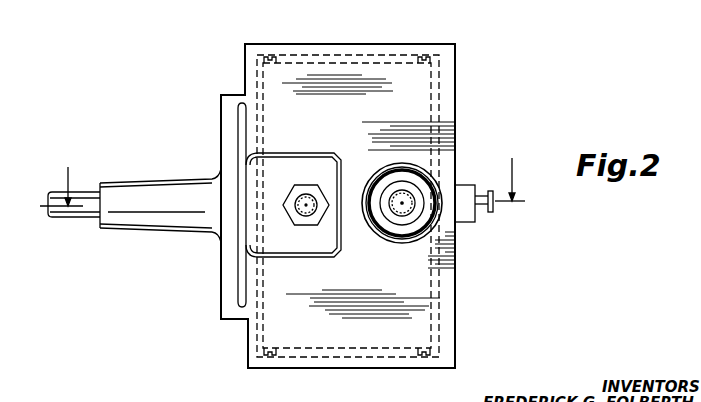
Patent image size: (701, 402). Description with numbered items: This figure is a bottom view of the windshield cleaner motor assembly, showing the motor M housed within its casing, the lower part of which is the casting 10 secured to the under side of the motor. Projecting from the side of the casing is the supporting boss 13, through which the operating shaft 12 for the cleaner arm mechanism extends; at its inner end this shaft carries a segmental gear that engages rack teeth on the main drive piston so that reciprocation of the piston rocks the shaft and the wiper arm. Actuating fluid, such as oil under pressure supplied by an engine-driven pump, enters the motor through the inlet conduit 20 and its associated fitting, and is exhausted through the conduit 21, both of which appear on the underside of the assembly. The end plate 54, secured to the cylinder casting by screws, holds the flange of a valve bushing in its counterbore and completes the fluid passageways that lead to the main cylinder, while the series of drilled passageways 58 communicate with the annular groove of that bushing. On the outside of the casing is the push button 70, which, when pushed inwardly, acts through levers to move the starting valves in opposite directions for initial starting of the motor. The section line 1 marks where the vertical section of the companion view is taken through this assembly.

The section line 1— 1 is at (284, 181).
The casting 10 is at (448, 58).
The operating shaft 12 is at (73, 213).
The supporting boss 13 is at (148, 202).
The inlet conduit 20 is at (415, 168).
The exhaust conduit 21 is at (297, 186).
The end plate 54 is at (312, 62).
The drilled passageways 58 is at (313, 346).
The push button 70 is at (490, 215).
The windshield cleaner motor M is at (433, 108).